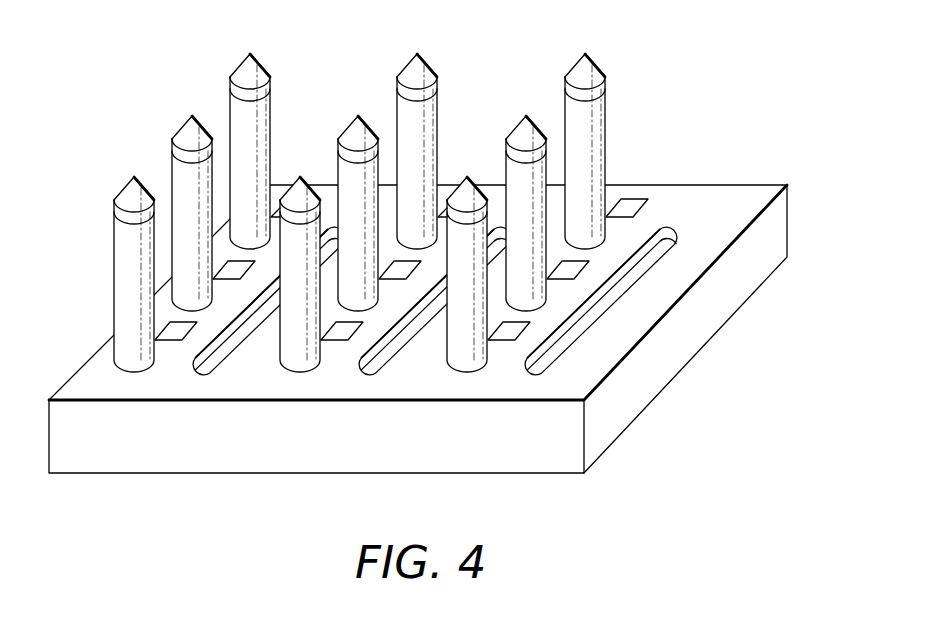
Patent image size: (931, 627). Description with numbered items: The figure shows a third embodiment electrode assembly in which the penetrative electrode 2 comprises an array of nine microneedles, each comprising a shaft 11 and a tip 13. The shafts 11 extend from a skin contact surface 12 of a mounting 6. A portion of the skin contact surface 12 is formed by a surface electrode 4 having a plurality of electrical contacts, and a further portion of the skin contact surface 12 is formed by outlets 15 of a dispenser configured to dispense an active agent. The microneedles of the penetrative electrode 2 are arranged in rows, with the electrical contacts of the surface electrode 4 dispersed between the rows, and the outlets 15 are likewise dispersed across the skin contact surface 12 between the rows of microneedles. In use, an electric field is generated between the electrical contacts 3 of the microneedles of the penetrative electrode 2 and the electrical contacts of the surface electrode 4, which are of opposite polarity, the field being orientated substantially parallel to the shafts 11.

The penetrative electrode 2 is at (438, 135).
The electrical contacts of the microneedles 3 is at (238, 60).
The surface electrode 4 is at (166, 330).
The mounting 6 is at (558, 449).
The shaft 11 is at (125, 258).
The skin contact surface 12 is at (755, 192).
The tip 13 is at (263, 66).
The outlets 15 is at (662, 237).